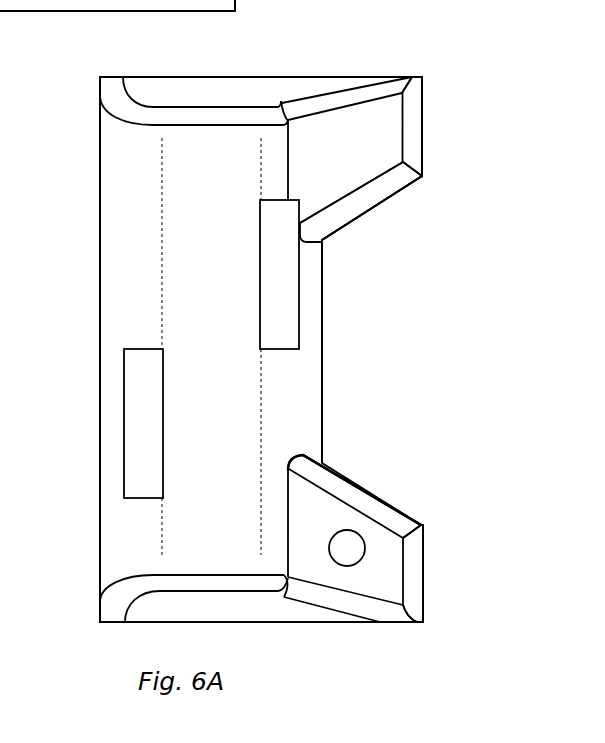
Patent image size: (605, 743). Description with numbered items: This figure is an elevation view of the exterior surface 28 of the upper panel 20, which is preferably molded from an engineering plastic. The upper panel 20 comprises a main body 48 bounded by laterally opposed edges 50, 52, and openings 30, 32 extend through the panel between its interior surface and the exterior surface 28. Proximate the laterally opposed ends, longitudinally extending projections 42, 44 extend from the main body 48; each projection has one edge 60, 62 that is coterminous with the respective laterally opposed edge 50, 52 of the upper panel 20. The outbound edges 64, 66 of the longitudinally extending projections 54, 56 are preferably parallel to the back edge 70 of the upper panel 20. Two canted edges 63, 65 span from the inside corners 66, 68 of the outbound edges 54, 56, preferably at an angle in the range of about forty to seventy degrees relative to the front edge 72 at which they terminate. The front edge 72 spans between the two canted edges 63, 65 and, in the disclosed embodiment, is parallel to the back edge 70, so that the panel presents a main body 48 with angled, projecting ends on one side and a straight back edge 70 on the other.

The upper panel 20 is at (248, 78).
The exterior surface 28 is at (132, 528).
The opening 30 is at (283, 298).
The opening 32 is at (138, 409).
The longitudinally extending projection 42 is at (422, 144).
The longitudinally extending projection 44 is at (421, 546).
The main body 48 is at (108, 145).
The laterally opposed edge 50 is at (123, 80).
The laterally opposed edge 52 is at (110, 623).
The longitudinally extending projection 54 is at (395, 76).
The longitudinally extending projection 56 is at (420, 625).
The edge of projection 60 is at (345, 78).
The edge of projection 62 is at (358, 620).
The canted edge 63 is at (390, 200).
The outbound edge 64 is at (422, 144).
The canted edge 65 is at (340, 475).
The outbound edge 66 is at (417, 177).
The inside corner 68 is at (418, 522).
The back edge 70 is at (120, 207).
The front edge 72 is at (315, 382).